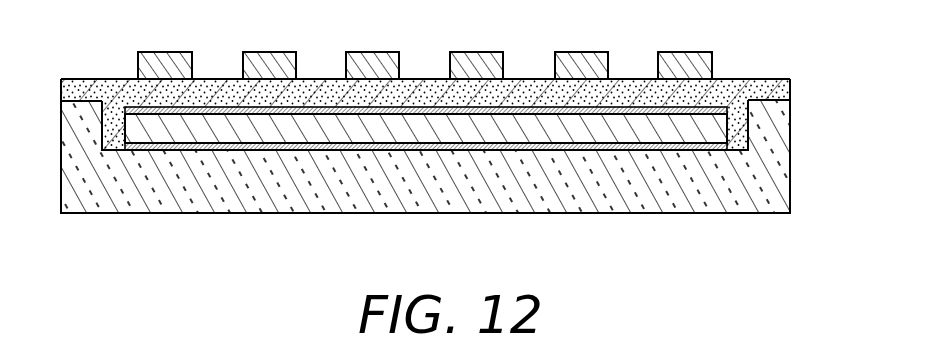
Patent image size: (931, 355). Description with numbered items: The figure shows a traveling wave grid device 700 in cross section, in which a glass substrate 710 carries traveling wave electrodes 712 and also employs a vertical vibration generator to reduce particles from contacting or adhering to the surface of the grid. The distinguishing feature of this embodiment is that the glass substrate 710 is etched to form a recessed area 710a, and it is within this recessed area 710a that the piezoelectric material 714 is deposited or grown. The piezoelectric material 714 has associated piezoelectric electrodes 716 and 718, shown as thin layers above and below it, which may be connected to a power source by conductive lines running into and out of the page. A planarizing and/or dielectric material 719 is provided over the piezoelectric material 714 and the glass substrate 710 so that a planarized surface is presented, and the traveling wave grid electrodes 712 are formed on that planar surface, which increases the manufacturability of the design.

The traveling wave grid device 700 is at (690, 29).
The glass substrate 710 is at (785, 120).
The recessed area 710a is at (742, 152).
The traveling wave electrodes 712 is at (258, 52).
The piezoelectric material 714 is at (552, 128).
The piezoelectric electrode 716 is at (629, 106).
The piezoelectric electrode 718 is at (677, 151).
The planarizing and/or dielectric material 719 is at (766, 79).